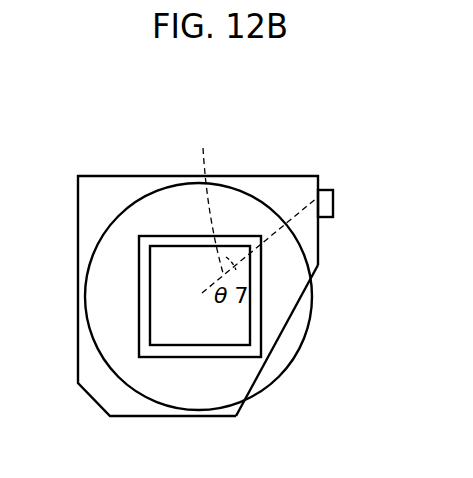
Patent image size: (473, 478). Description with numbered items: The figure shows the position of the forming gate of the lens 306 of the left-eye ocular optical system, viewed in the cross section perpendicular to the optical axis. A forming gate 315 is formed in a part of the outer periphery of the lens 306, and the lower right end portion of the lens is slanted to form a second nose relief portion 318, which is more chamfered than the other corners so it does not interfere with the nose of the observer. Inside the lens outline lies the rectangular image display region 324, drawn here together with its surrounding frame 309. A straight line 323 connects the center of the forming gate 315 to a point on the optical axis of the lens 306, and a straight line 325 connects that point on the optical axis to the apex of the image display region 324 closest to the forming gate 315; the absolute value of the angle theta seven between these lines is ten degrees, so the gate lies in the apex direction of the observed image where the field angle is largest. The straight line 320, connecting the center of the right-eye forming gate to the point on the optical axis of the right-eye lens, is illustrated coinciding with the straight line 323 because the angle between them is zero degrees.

The lens 306 is at (78, 228).
The outer frame of image sensor 309 is at (261, 329).
The forming gate 315 is at (323, 190).
The second nose relief portion 318 is at (270, 365).
The straight line 320 is at (198, 296).
The straight line 323 is at (303, 215).
The image display region 324 is at (250, 294).
The straight line 325 is at (203, 201).